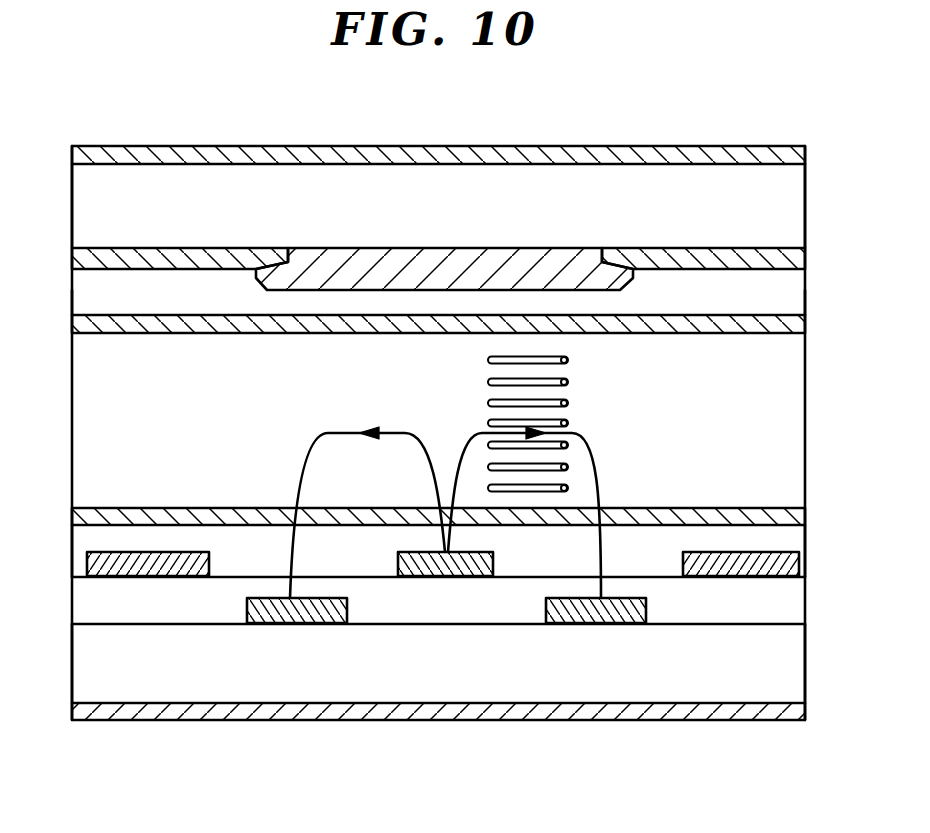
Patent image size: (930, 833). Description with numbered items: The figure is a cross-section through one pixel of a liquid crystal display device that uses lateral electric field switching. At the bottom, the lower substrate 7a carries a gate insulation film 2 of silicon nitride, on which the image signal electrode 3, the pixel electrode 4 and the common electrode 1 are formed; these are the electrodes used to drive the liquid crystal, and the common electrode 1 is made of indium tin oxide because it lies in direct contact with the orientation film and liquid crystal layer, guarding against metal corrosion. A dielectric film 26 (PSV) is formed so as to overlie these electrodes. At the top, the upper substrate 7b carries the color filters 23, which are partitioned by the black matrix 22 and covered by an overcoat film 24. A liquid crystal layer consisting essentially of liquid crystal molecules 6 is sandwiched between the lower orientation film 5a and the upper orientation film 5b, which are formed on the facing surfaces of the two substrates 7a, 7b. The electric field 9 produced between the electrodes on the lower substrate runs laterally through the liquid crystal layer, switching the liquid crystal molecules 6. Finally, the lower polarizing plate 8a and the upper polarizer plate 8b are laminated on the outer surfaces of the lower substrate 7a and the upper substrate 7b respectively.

The common electrode 1 is at (297, 613).
The gate insulation film 2 is at (207, 610).
The image signal electrode 3 is at (137, 565).
The pixel electrode 4 is at (440, 578).
The lower orientation film 5a is at (218, 512).
The upper orientation film 5b is at (325, 328).
The liquid crystal molecules 6 is at (578, 399).
The lower substrate 7a is at (515, 673).
The upper substrate 7b is at (430, 185).
The lower polarizing plate 8a is at (667, 717).
The upper polarizer plate 8b is at (328, 152).
The electric field 9 is at (597, 474).
The black matrix 22 is at (165, 262).
The color filters 23 is at (517, 262).
The overcoat film 24 is at (407, 305).
The dielectric film 26 is at (722, 537).